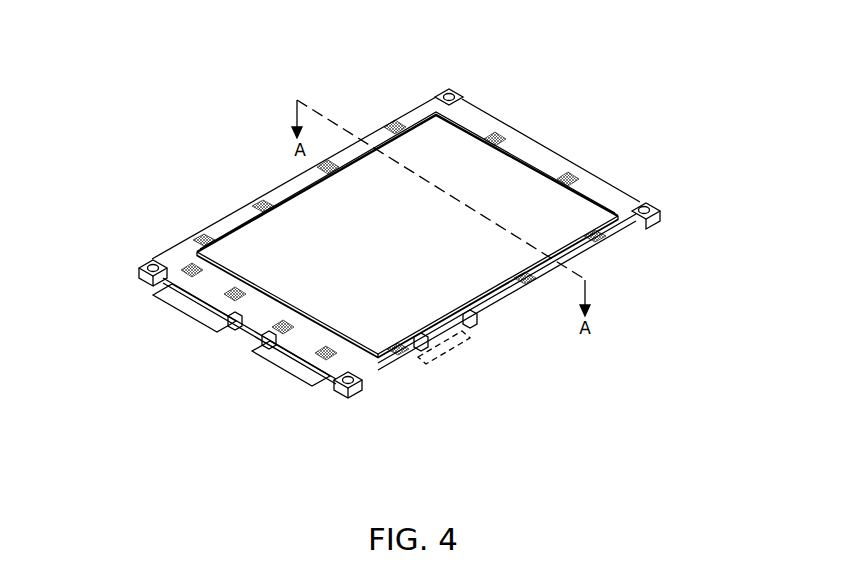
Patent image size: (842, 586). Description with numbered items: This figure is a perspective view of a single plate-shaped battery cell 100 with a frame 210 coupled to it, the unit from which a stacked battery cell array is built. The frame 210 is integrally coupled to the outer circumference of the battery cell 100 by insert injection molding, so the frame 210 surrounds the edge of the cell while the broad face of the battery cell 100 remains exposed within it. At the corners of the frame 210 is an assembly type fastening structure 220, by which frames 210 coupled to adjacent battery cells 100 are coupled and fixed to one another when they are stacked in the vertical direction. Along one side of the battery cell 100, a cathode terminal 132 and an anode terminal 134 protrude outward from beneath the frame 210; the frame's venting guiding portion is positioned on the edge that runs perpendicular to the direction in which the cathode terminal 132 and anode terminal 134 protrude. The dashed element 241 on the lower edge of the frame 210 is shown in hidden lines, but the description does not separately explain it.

The battery cell 100 is at (471, 150).
The frame 210 is at (550, 158).
The assembly type fastening structure 220 is at (442, 92).
The cathode terminal 132 is at (186, 312).
The anode terminal 134 is at (290, 367).
The connector portion 241 is at (456, 338).